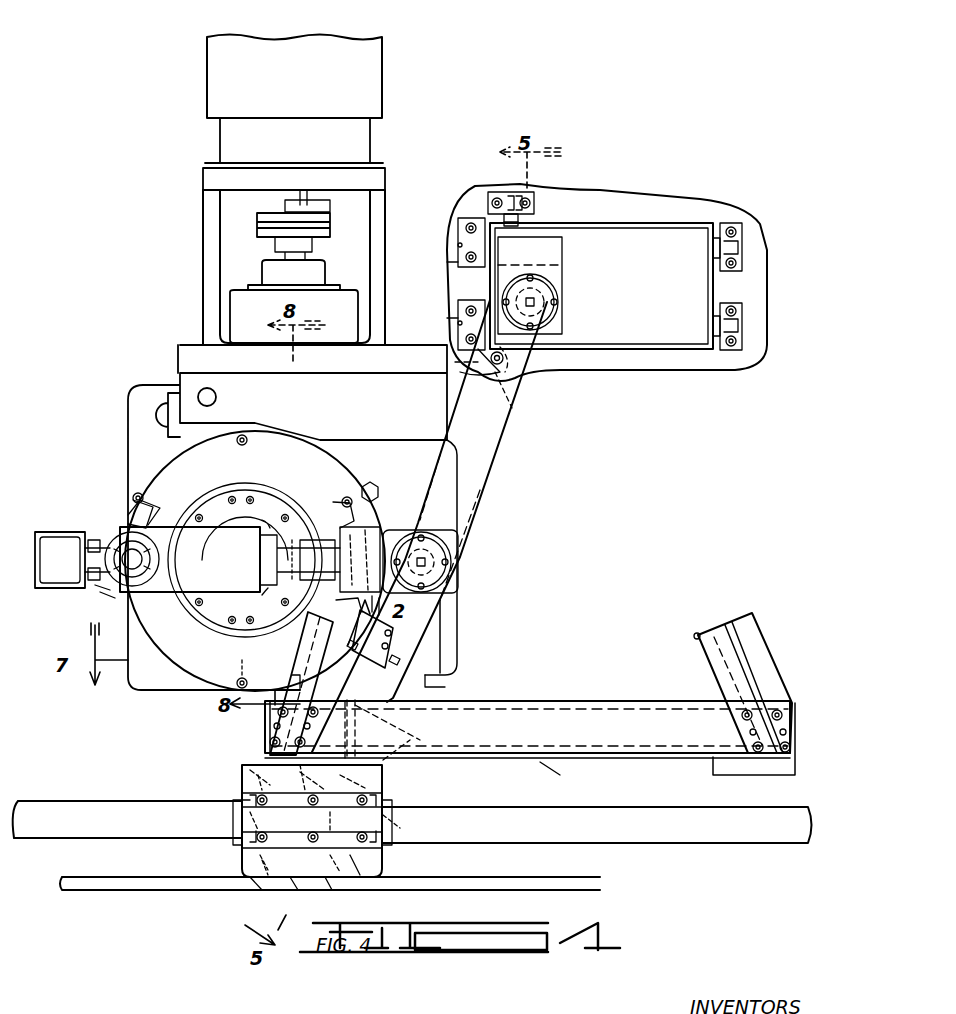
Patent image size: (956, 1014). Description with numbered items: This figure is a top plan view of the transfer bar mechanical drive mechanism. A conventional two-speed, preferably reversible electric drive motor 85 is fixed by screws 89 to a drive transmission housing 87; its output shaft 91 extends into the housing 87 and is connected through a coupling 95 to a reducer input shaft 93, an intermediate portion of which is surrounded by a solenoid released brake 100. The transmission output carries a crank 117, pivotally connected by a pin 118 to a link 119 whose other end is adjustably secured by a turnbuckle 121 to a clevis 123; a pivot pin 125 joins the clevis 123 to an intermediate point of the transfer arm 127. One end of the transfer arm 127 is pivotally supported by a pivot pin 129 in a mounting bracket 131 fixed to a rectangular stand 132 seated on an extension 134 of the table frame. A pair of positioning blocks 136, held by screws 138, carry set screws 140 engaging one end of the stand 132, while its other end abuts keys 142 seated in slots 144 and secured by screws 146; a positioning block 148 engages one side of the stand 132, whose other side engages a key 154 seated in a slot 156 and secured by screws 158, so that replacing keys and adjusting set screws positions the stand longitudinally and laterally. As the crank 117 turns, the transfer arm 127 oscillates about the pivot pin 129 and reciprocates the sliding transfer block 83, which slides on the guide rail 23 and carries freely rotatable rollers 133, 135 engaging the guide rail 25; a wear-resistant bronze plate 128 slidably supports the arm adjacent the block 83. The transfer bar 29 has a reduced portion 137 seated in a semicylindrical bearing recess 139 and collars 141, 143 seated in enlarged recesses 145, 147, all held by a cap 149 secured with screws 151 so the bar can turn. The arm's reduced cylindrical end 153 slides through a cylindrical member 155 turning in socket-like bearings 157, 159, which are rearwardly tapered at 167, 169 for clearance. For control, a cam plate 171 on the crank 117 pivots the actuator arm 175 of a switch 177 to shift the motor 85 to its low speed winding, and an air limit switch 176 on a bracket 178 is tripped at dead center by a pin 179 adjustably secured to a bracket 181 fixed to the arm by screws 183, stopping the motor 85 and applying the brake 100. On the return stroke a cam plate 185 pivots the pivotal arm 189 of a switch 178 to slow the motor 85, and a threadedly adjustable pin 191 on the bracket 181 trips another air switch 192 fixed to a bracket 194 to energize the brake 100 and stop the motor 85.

The electric drive motor 85 is at (405, 102).
The screws 89 is at (215, 153).
The drive transmission housing 87 is at (168, 345).
The output shaft 91 is at (312, 190).
The coupling 95 is at (332, 222).
The reducer input shaft 93 is at (290, 258).
The solenoid released brake 100 is at (227, 275).
The frame extension 134 is at (610, 217).
The rectangular stand 132 is at (660, 238).
The mounting bracket 131 is at (553, 252).
The pivot pin 129 is at (562, 290).
The set screw 140 is at (720, 222).
The positioning block 148 is at (525, 195).
The key 154 is at (532, 220).
The screws 146 is at (458, 222).
The keys 142 is at (458, 240).
The slots 144 is at (458, 268).
The positioning blocks 136 is at (742, 245).
The screws 138 is at (738, 232).
The screws 158 is at (478, 370).
The slot 156 is at (506, 392).
The transfer arm 127 is at (490, 485).
The link 119 is at (168, 505).
The crank 117 is at (222, 520).
The pin 118 is at (150, 568).
The turnbuckle 121 is at (302, 540).
The switch 177 is at (72, 560).
The actuator arm 175 is at (92, 545).
The cam plate 185 is at (135, 512).
The switch 178 is at (92, 585).
The pivotal arm 189 is at (105, 600).
The cam plate 171 is at (355, 495).
The clevis 123 is at (358, 535).
The pivot pin 125 is at (458, 567).
The air switch 192 is at (395, 622).
The bracket 181 is at (392, 640).
The screws 183 is at (420, 660).
The threadedly adjustable pin 191 is at (373, 661).
The pin 179 is at (445, 675).
The bracket 194 is at (290, 655).
The wear-resistant plate 128 is at (525, 700).
The reduced portion 137 is at (365, 720).
The rearward taper 169 is at (412, 748).
The air limit switch 176 is at (697, 640).
The guide rail 23 is at (554, 778).
The transfer bar 29 is at (628, 815).
The collar 141 is at (220, 808).
The guide rail 25 is at (100, 880).
The roller 133 is at (238, 865).
The screws 151 is at (278, 843).
The sliding transfer block 83 is at (242, 765).
The enlarged semicylindrical bearing recess 145 is at (240, 798).
The rearward taper 167 is at (242, 782).
The socket-like bearing 159 is at (383, 780).
The cap 149 is at (245, 824).
The enlarged semicylindrical bearing recess 147 is at (385, 820).
The collar 143 is at (402, 838).
The roller 135 is at (385, 860).
The socket-like bearing 157 is at (225, 890).
The reduced cylindrical end 153 is at (308, 890).
The cylindrical member 155 is at (342, 890).
The semicylindrical bearing recess 139 is at (345, 888).